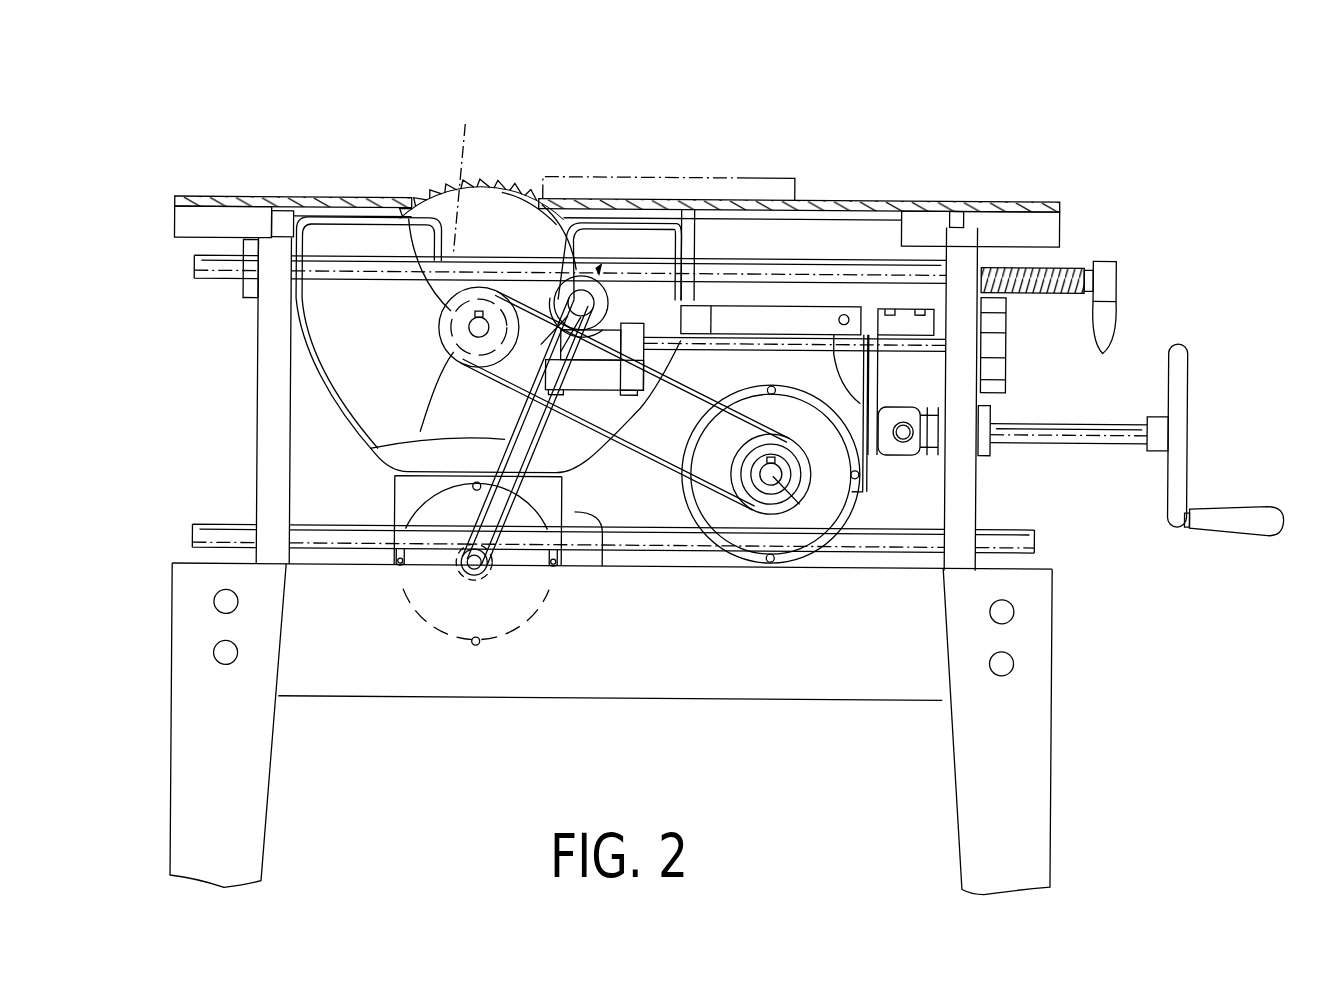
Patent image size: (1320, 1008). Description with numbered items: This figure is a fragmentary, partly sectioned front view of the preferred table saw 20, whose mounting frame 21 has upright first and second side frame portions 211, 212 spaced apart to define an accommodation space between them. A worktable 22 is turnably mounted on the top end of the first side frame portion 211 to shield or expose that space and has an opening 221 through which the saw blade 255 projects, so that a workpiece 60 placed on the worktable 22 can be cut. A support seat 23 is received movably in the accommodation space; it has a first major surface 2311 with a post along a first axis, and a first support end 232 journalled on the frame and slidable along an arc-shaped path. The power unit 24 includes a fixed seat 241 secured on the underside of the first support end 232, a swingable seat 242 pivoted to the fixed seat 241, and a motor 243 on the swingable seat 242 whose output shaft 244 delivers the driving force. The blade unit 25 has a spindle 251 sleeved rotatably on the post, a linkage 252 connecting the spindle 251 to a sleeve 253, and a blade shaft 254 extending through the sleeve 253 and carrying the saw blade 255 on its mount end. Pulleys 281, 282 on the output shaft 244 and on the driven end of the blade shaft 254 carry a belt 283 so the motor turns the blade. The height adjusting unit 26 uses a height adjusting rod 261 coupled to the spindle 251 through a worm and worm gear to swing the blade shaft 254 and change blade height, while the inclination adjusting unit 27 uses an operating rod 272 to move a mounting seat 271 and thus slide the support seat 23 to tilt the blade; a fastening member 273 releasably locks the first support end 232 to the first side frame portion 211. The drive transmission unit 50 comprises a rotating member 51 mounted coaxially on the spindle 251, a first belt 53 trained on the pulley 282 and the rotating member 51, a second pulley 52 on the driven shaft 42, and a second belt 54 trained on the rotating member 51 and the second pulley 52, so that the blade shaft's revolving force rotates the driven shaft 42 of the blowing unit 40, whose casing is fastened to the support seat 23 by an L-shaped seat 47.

The table saw 20 is at (1027, 190).
The mounting frame 21 is at (256, 414).
The first side frame portion 211 is at (977, 505).
The second side frame portion 212 is at (268, 247).
The worktable 22 is at (197, 197).
The opening 221 is at (338, 199).
The support seat 23 is at (315, 218).
The first major surface 2311 is at (320, 324).
The first support end 232 is at (877, 242).
The power unit 24 is at (684, 480).
The fixed seat 241 is at (820, 305).
The swingable seat 242 is at (862, 465).
The motor 243 is at (822, 498).
The output shaft 244 is at (800, 503).
The blade unit 25 is at (605, 235).
The spindle 251 is at (658, 300).
The linkage 252 is at (512, 215).
The sleeve 253 is at (464, 173).
The blade shaft 254 is at (455, 315).
The saw blade 255 is at (425, 185).
The height adjusting unit 26 is at (1006, 362).
The height adjusting rod 261 is at (735, 303).
The inclination adjusting unit 27 is at (1187, 373).
The mounting seat 271 is at (923, 305).
The operating rod 272 is at (1100, 441).
The fastening member 273 is at (1078, 262).
The pulley 281 is at (750, 494).
The pulley 282 is at (450, 367).
The belt 283 is at (649, 460).
The blowing unit 40 is at (562, 514).
The driven shaft 42 is at (474, 582).
The L-shaped seat 47 is at (388, 485).
The drive transmission unit 50 is at (598, 283).
The rotating member 51 is at (573, 290).
The second pulley 52 is at (447, 530).
The first belt 53 is at (548, 283).
The second belt 54 is at (370, 450).
The workpiece 60 is at (773, 192).